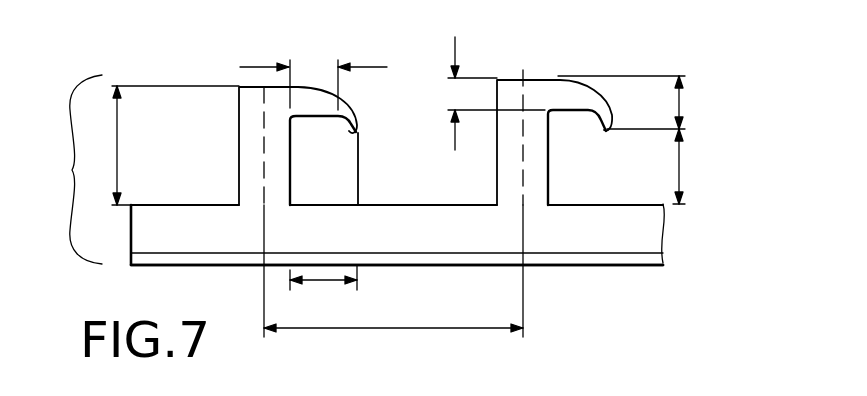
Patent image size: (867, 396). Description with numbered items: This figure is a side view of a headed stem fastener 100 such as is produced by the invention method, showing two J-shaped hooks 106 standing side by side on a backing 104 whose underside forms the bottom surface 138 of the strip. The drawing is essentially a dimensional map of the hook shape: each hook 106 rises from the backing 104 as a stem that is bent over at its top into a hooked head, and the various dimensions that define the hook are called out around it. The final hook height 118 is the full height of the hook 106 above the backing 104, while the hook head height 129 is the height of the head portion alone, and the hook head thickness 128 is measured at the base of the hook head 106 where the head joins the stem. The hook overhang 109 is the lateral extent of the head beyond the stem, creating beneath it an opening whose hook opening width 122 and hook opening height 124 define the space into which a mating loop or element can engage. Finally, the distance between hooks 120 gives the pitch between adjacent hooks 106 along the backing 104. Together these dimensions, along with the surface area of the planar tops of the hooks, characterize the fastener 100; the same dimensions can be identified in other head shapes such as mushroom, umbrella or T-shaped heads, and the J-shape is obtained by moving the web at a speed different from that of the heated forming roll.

The mounting bracket / panel assembly 100 is at (61, 169).
The base plate 104 is at (647, 228).
The J-shaped hook 106 is at (277, 117).
The hook overhang 109 is at (255, 66).
The final hook height 118 is at (118, 142).
The distance between hooks 120 is at (417, 328).
The hook opening width 122 is at (320, 282).
The hook opening height 124 is at (683, 167).
The hook head thickness 128 is at (452, 140).
The hook head height 129 is at (682, 103).
The bottom surface of base plate 138 is at (612, 257).